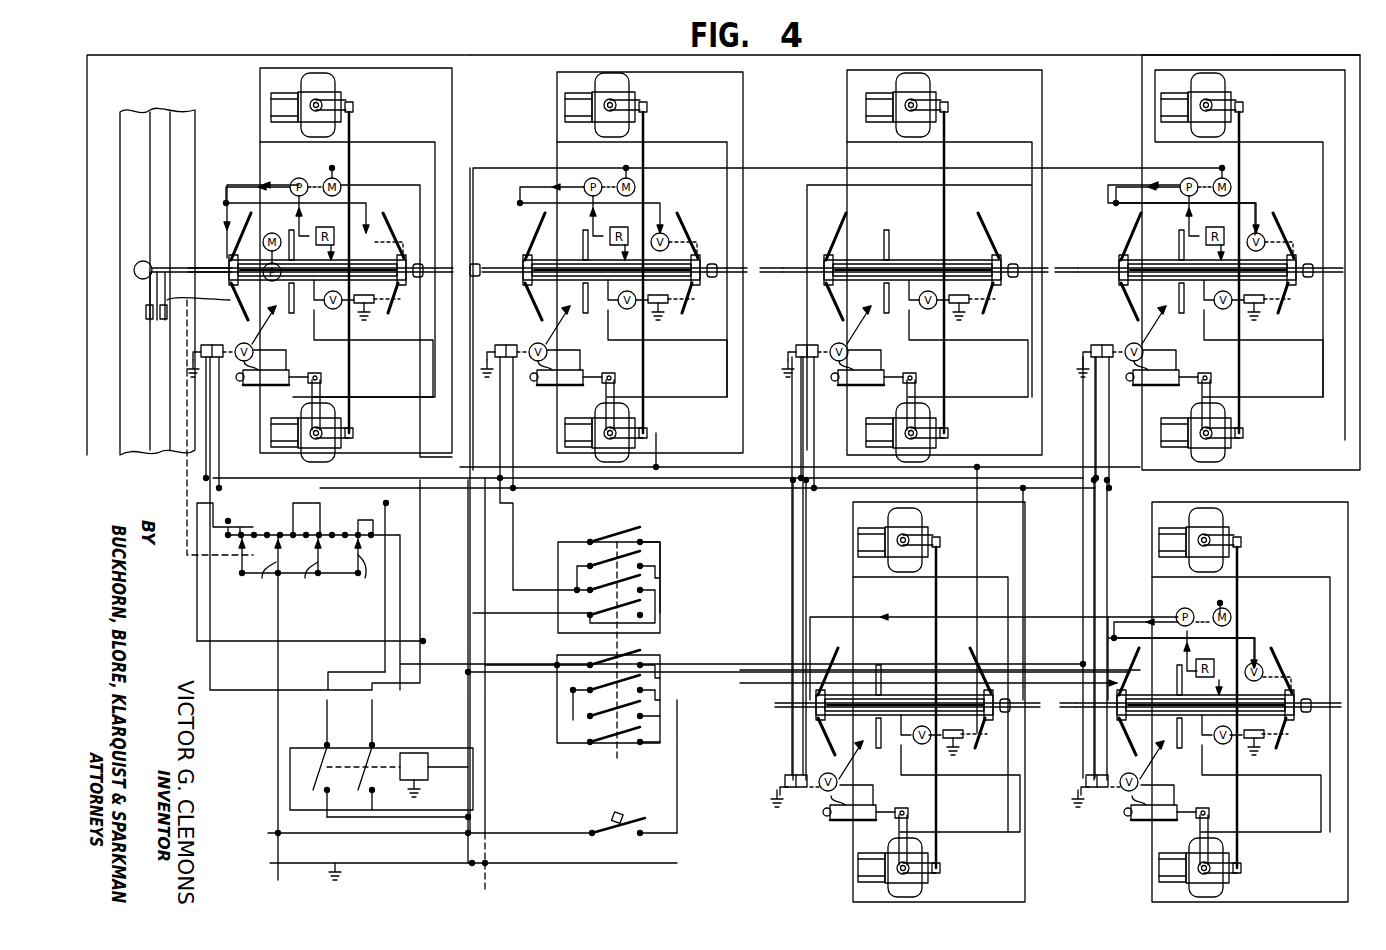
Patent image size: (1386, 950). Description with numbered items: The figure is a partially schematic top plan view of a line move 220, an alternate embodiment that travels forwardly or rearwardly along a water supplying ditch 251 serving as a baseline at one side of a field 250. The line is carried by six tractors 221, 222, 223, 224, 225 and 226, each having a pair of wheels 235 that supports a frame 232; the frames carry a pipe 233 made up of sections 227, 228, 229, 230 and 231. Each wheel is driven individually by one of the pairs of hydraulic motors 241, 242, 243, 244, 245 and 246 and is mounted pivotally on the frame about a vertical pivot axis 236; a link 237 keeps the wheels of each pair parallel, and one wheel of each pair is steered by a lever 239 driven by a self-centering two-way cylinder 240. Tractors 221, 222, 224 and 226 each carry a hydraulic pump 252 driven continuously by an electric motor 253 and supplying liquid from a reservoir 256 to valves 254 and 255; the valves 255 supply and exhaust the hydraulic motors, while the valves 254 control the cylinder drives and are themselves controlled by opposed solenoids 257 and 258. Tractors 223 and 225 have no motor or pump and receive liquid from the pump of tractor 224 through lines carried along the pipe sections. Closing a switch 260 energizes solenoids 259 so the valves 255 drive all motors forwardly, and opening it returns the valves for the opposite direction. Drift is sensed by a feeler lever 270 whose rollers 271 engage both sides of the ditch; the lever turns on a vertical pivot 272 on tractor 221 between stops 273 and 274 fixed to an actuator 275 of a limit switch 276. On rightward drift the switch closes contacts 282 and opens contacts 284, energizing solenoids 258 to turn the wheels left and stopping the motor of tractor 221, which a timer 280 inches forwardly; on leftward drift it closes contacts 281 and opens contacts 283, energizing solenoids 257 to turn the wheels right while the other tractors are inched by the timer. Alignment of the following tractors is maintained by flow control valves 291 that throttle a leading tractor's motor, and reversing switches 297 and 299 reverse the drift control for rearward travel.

The line move 220 is at (220, 92).
The field 250 is at (513, 56).
The water supplying ditch 251 is at (178, 118).
The tractor 221 is at (242, 170).
The tractor 222 is at (532, 165).
The tractor 223 is at (855, 158).
The tractor 224 is at (1158, 156).
The tractor 225 is at (840, 560).
The tractor 226 is at (1140, 562).
The pipe section 227 is at (372, 262).
The pipe section 228 is at (788, 268).
The pipe section 229 is at (1062, 268).
The pipe section 230 is at (784, 706).
The pipe section 231 is at (1076, 706).
The frame 232 is at (586, 250).
The pipe 233 is at (498, 262).
The wheels 235 is at (336, 85).
The vertical pivot axis 236 is at (353, 108).
The link 237 is at (352, 126).
The lever 239 is at (325, 376).
The self-centering two-way cylinder 240 is at (272, 385).
The hydraulic motor 241 is at (271, 105).
The hydraulic motor 242 is at (565, 105).
The hydraulic motor 243 is at (866, 105).
The hydraulic motor 244 is at (1161, 105).
The hydraulic motor 245 is at (874, 535).
The hydraulic motor 246 is at (1174, 533).
The hydraulic pump 252 is at (295, 178).
The electric motor 253 is at (331, 178).
The valve 254 is at (235, 355).
The valve 255 is at (345, 318).
The reservoir 256 is at (288, 290).
The solenoid 257 is at (230, 348).
The solenoid 258 is at (236, 345).
The solenoid 259 is at (374, 303).
The switch 260 is at (625, 823).
The feeler lever 270 is at (138, 275).
The rollers 271 is at (180, 268).
The vertical pivot 272 is at (160, 272).
The stop 273 is at (160, 315).
The stop 274 is at (198, 291).
The actuator 275 is at (146, 311).
The limit switch 276 is at (238, 582).
The timer 280 is at (422, 756).
The contacts 281 is at (260, 582).
The contacts 282 is at (302, 582).
The contacts 283 is at (298, 591).
The contacts 284 is at (357, 578).
The flow control valve 291 is at (662, 232).
The reversing switch 297 is at (600, 750).
The reversing switch 299 is at (600, 534).